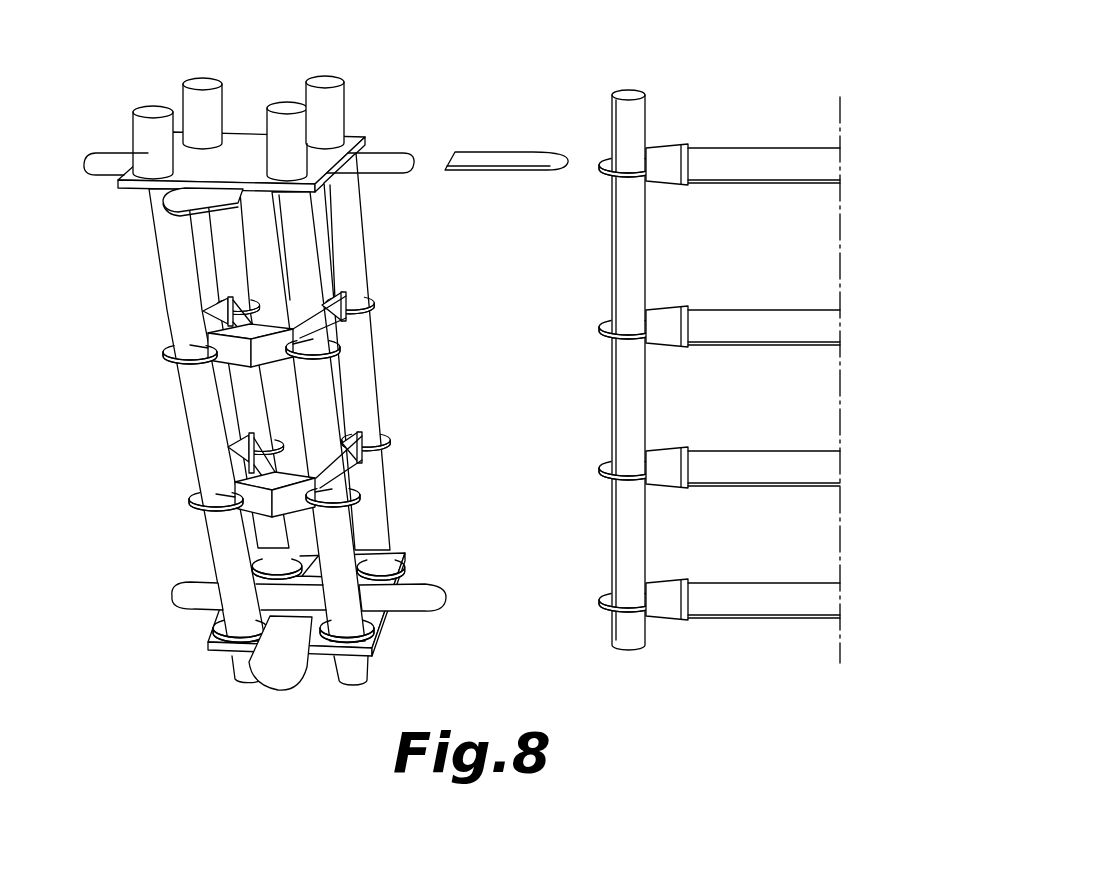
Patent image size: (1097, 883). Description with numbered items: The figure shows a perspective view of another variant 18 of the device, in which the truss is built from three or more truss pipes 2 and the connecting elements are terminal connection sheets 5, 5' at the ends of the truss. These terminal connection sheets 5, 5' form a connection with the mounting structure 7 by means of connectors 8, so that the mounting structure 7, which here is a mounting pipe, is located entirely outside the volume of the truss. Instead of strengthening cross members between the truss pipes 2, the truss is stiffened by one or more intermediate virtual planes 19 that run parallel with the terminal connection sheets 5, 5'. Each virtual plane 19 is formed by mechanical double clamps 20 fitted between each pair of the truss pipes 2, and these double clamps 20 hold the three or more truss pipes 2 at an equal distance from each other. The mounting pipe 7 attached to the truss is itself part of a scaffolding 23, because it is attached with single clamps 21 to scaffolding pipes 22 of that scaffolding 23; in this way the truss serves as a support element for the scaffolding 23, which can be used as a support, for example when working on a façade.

The truss pipes 2 is at (205, 98).
The connecting element 5 is at (241, 124).
The terminal connection sheet 5' is at (306, 629).
The mounting structure 7 is at (625, 236).
The connectors 8 is at (122, 155).
The variant of the device 18 is at (436, 92).
The intermediate virtual planes 19 is at (410, 372).
The mechanical double clamps 20 is at (241, 300).
The single clamps 21 is at (677, 162).
The bar 22 is at (762, 162).
The scaffolding 23 is at (844, 70).